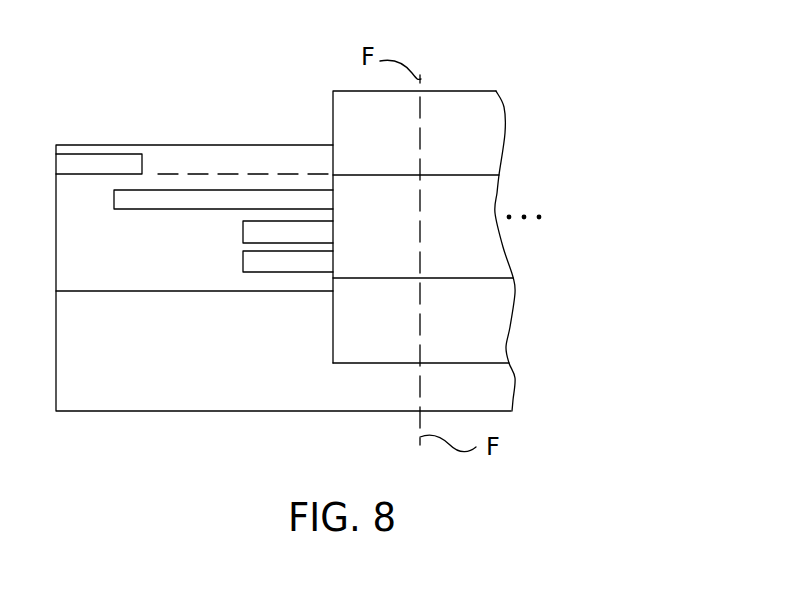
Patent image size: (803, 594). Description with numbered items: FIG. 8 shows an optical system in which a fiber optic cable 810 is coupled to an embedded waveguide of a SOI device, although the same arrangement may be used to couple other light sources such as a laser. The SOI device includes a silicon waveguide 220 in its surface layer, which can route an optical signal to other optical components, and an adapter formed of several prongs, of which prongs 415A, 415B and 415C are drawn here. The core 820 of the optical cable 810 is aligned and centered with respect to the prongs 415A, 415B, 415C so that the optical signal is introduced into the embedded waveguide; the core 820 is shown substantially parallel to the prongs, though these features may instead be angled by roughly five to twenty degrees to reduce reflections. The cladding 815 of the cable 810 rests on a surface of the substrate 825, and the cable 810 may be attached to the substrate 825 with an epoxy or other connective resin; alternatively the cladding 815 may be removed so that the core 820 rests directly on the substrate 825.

The silicon waveguide 220 is at (126, 154).
The first prong 415A is at (262, 190).
The second prong 415B is at (243, 227).
The third prong 415C is at (243, 259).
The fiber optic cable 810 is at (541, 80).
The cladding 815 is at (500, 134).
The core 820 is at (498, 195).
The substrate 825 is at (514, 378).